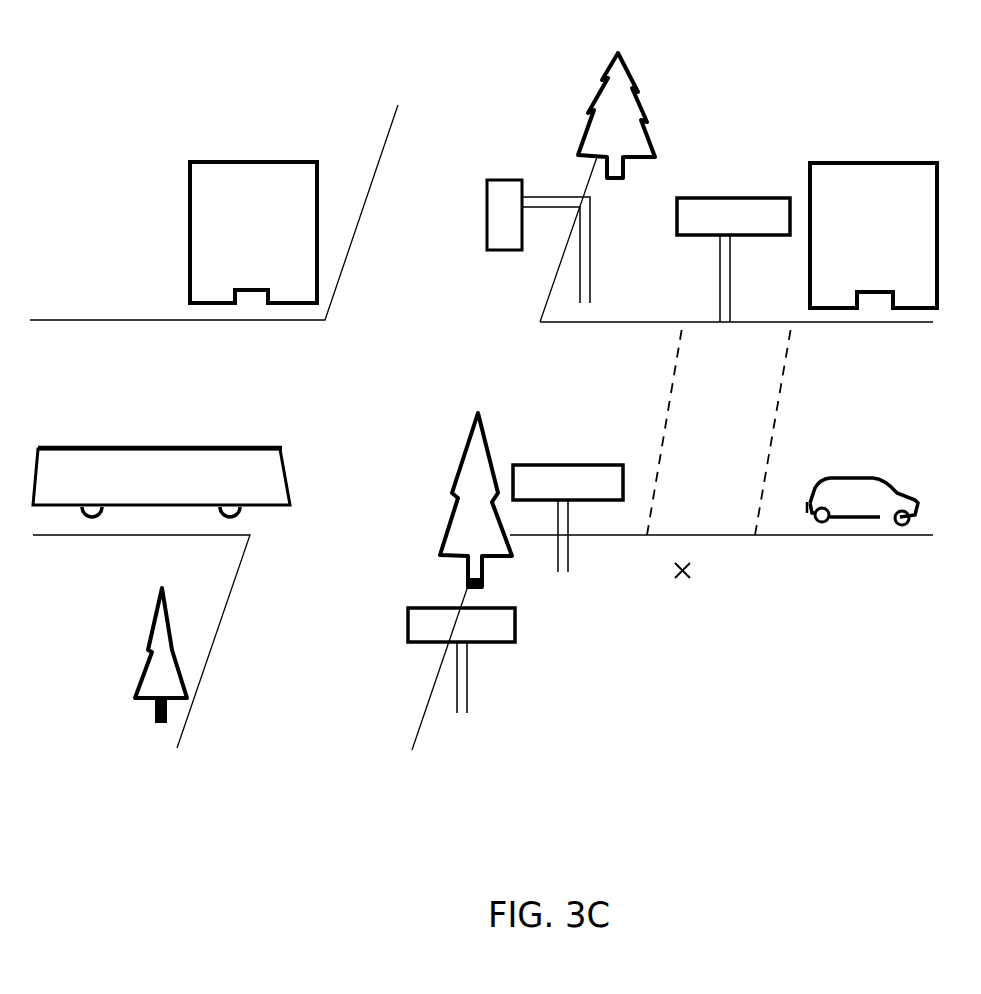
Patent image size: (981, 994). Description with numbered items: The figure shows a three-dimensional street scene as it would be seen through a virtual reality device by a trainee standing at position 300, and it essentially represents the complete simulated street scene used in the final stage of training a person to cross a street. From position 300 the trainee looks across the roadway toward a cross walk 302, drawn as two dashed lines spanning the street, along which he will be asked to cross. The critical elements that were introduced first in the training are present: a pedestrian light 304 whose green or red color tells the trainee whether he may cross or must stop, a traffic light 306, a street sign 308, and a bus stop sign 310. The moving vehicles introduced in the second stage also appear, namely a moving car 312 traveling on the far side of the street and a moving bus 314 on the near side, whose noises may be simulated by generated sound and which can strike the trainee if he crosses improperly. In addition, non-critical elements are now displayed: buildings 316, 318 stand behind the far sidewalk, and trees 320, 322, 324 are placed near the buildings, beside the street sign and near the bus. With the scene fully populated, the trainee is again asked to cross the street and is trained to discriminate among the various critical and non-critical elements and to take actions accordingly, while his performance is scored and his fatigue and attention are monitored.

The position 300 is at (682, 582).
The cross walk 302 is at (765, 477).
The pedestrian light 304 is at (750, 193).
The traffic light 306 is at (505, 178).
The street sign 308 is at (587, 462).
The bus stop sign 310 is at (432, 607).
The moving car 312 is at (895, 487).
The moving bus 314 is at (240, 447).
The building 316 is at (927, 162).
The building 318 is at (278, 160).
The tree 320 is at (630, 68).
The tree 322 is at (470, 427).
The tree 324 is at (148, 647).